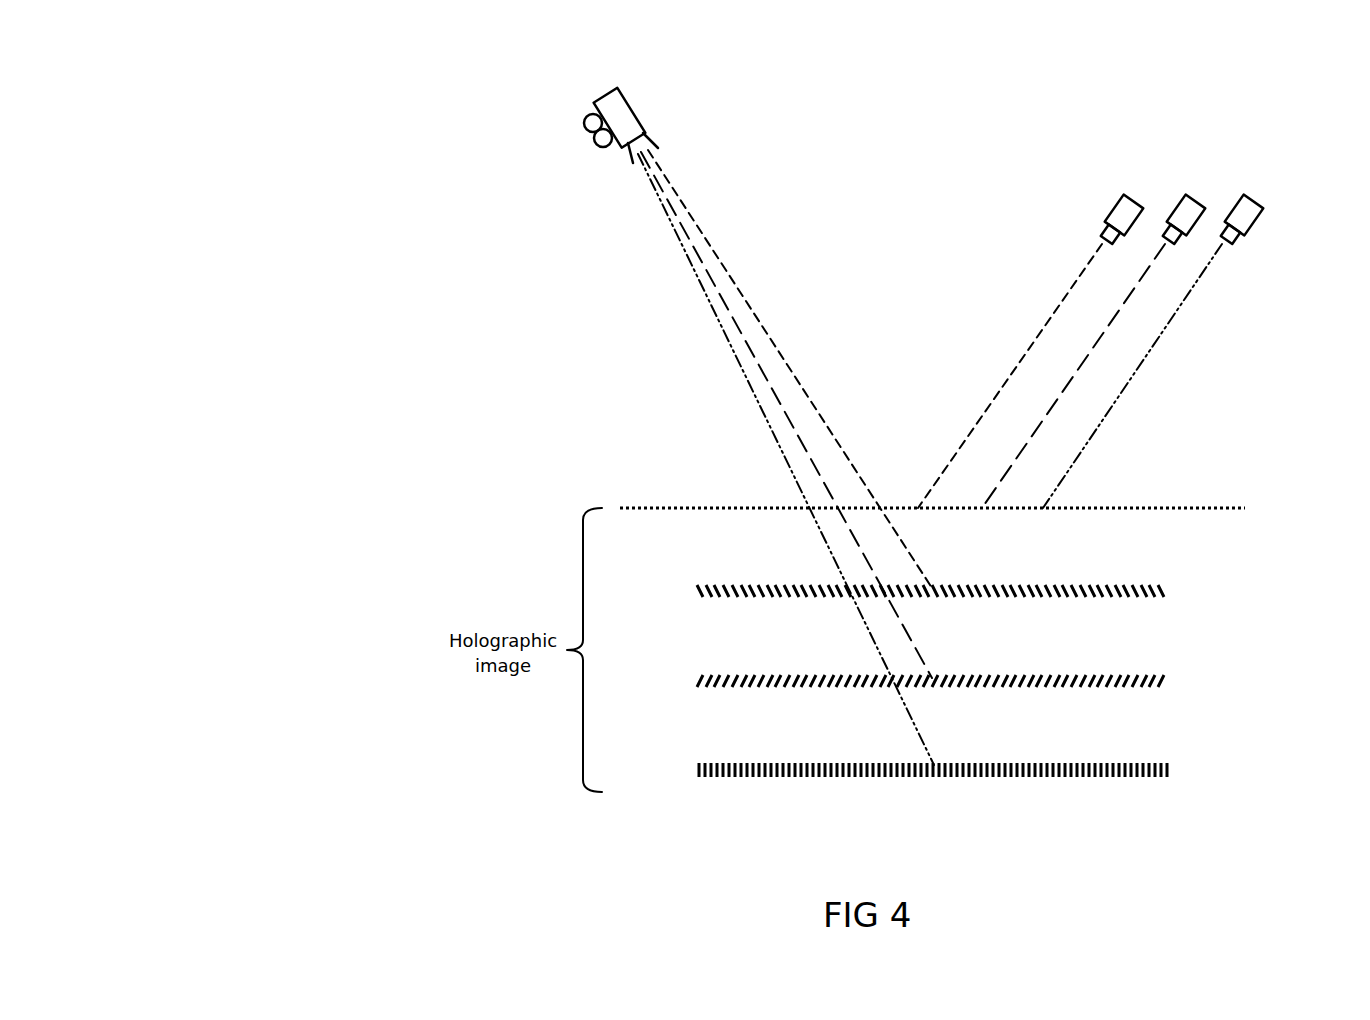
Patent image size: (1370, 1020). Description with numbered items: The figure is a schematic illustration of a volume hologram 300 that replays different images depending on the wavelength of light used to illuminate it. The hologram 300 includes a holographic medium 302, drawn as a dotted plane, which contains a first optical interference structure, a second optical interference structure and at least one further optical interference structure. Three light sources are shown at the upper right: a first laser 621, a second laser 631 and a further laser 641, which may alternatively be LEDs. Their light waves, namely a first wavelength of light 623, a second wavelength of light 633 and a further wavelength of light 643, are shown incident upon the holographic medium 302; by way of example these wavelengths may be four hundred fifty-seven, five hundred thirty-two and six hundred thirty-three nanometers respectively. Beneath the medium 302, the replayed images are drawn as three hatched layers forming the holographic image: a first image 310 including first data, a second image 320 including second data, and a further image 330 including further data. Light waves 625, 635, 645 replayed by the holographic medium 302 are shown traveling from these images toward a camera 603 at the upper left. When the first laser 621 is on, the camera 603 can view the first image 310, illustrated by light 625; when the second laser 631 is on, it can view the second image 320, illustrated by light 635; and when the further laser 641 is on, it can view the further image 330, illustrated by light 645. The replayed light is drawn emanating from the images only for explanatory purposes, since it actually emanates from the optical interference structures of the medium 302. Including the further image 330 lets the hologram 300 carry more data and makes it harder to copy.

The volume hologram 300 is at (368, 243).
The holographic medium 302 is at (1230, 508).
The first image 310 is at (1168, 593).
The second image 320 is at (1168, 683).
The further image 330 is at (1168, 770).
The camera 603 is at (640, 100).
The first laser 621 is at (1131, 198).
The first wavelength of light 623 is at (1068, 297).
The light replayed from first image 625 is at (732, 283).
The second laser 631 is at (1194, 198).
The second wavelength of light 633 is at (1107, 328).
The light replayed from second image 635 is at (729, 311).
The further laser 641 is at (1254, 198).
The further wavelength of light 643 is at (1145, 359).
The light replayed from further image 645 is at (731, 340).